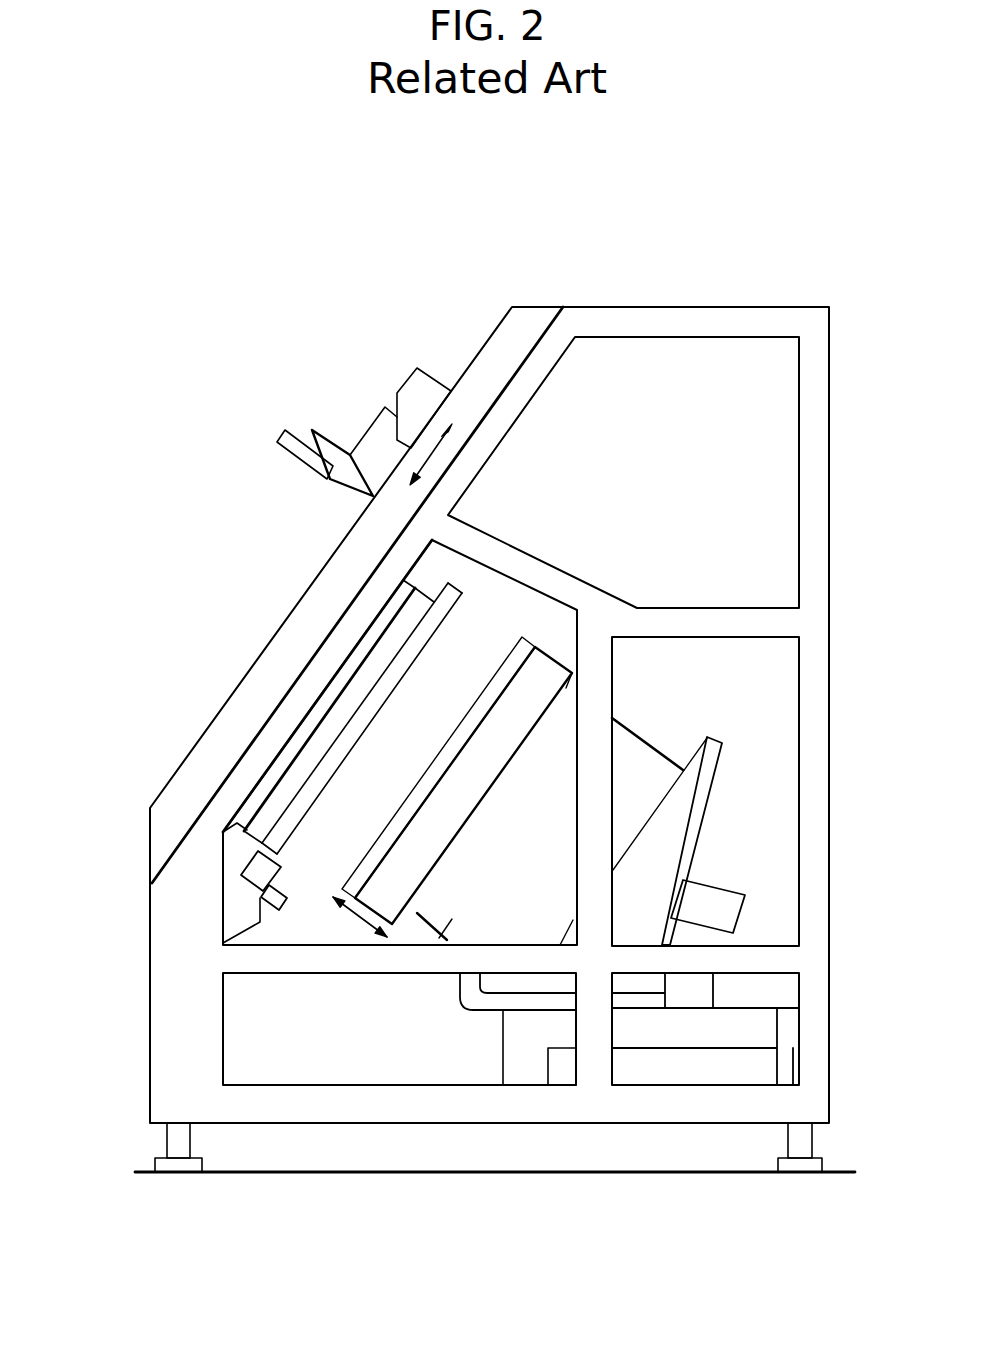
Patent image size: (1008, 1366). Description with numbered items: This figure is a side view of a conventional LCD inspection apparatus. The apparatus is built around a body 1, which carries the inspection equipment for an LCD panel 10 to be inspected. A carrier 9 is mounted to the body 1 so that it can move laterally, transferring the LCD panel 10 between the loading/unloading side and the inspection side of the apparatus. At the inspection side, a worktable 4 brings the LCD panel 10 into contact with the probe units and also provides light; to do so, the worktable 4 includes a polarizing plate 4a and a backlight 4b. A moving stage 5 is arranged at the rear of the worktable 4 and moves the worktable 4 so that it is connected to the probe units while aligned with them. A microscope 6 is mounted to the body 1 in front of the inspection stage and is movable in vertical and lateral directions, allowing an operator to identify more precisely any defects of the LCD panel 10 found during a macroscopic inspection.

The body 1 is at (700, 318).
The worktable 4 is at (405, 982).
The polarizing plate 4a is at (370, 860).
The backlight 4b is at (415, 875).
The moving stage 5 is at (514, 905).
The microscope 6 is at (355, 415).
The carrier 9 is at (245, 873).
The LCD panel 10 is at (350, 745).